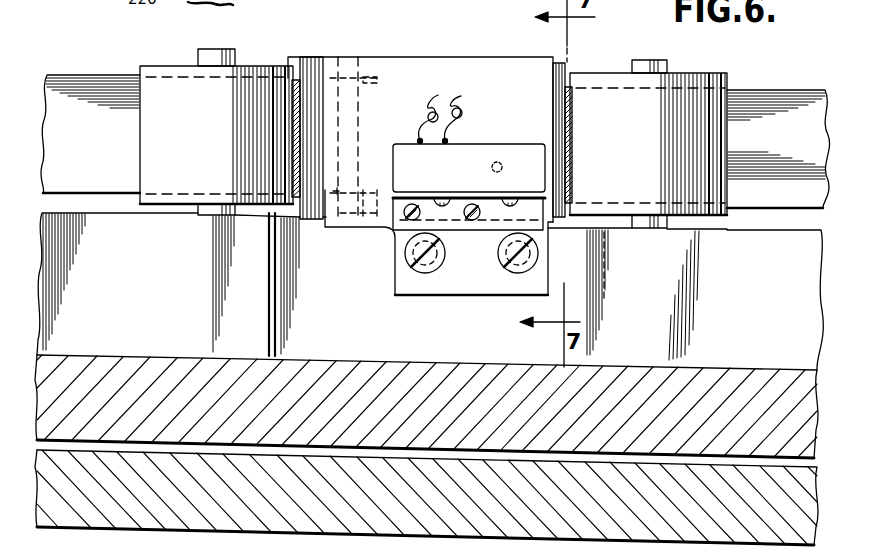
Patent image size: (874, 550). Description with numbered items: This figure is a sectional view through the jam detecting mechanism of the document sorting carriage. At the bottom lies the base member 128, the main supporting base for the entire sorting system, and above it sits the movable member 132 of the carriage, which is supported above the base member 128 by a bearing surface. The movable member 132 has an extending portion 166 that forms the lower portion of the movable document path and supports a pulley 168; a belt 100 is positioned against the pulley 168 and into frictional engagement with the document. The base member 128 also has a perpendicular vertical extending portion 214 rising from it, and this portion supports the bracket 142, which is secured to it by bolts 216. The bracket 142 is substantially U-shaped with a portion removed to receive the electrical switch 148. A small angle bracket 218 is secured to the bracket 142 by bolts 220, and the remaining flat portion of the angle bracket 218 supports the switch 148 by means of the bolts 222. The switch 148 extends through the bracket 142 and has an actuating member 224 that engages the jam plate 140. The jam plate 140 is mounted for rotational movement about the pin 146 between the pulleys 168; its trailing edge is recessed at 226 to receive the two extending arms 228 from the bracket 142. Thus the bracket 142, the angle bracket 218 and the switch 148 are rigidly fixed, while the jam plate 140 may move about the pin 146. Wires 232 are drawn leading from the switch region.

The belt 100 is at (60, 85).
The pulley 168 is at (143, 63).
The jam plate 140 is at (567, 40).
The bolts 222 is at (547, 222).
The bracket 142 is at (428, 67).
The bolts 216 is at (441, 272).
The electrical switch 148 is at (495, 152).
The angle bracket 218 is at (530, 192).
The bolts 220 is at (418, 214).
The actuating member 224 is at (492, 167).
The lead wires 232 is at (438, 96).
The pin 146 is at (347, 67).
The recess 226 is at (377, 72).
The extending arms 228 is at (333, 67).
The extending portion 166 is at (268, 297).
The vertical extending portion 214 is at (277, 337).
The movable member 132 is at (117, 370).
The base member 128 is at (700, 470).